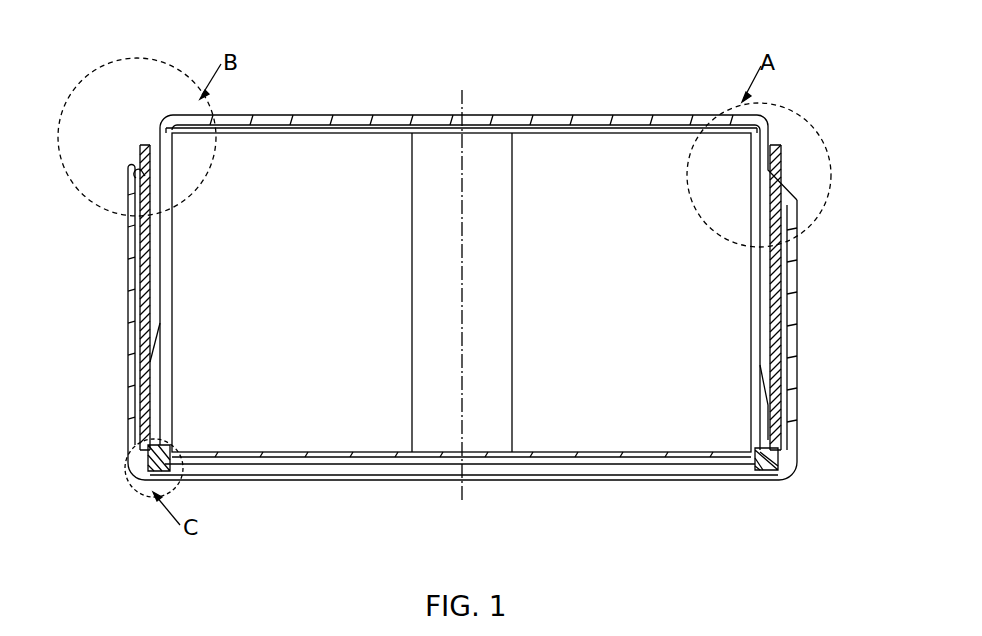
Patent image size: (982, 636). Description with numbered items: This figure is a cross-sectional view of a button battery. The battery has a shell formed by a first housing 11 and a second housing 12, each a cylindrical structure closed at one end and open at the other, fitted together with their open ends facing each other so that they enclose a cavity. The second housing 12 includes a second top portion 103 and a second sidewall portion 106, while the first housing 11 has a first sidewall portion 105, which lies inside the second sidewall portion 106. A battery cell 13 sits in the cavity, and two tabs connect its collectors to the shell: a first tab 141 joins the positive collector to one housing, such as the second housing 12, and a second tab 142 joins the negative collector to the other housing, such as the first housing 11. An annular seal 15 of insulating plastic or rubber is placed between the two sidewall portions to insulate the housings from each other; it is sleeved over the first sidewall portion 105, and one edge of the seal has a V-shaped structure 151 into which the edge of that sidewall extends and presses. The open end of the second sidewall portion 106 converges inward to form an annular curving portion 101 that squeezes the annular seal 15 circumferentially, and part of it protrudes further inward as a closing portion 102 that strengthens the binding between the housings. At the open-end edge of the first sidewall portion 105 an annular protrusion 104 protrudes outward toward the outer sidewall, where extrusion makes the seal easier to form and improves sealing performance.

The first housing 11 is at (655, 95).
The second housing 12 is at (352, 487).
The battery cell 13 is at (610, 419).
The annular seal 15 is at (782, 235).
The annular curving portion 101 is at (137, 165).
The closing portion 102 is at (789, 188).
The second top portion 103 is at (484, 458).
The annular protrusion 104 is at (782, 455).
The first sidewall portion 105 is at (755, 346).
The second sidewall portion 106 is at (789, 373).
The first tab 141 is at (538, 460).
The second tab 142 is at (494, 128).
The V-shaped structure 151 is at (778, 467).